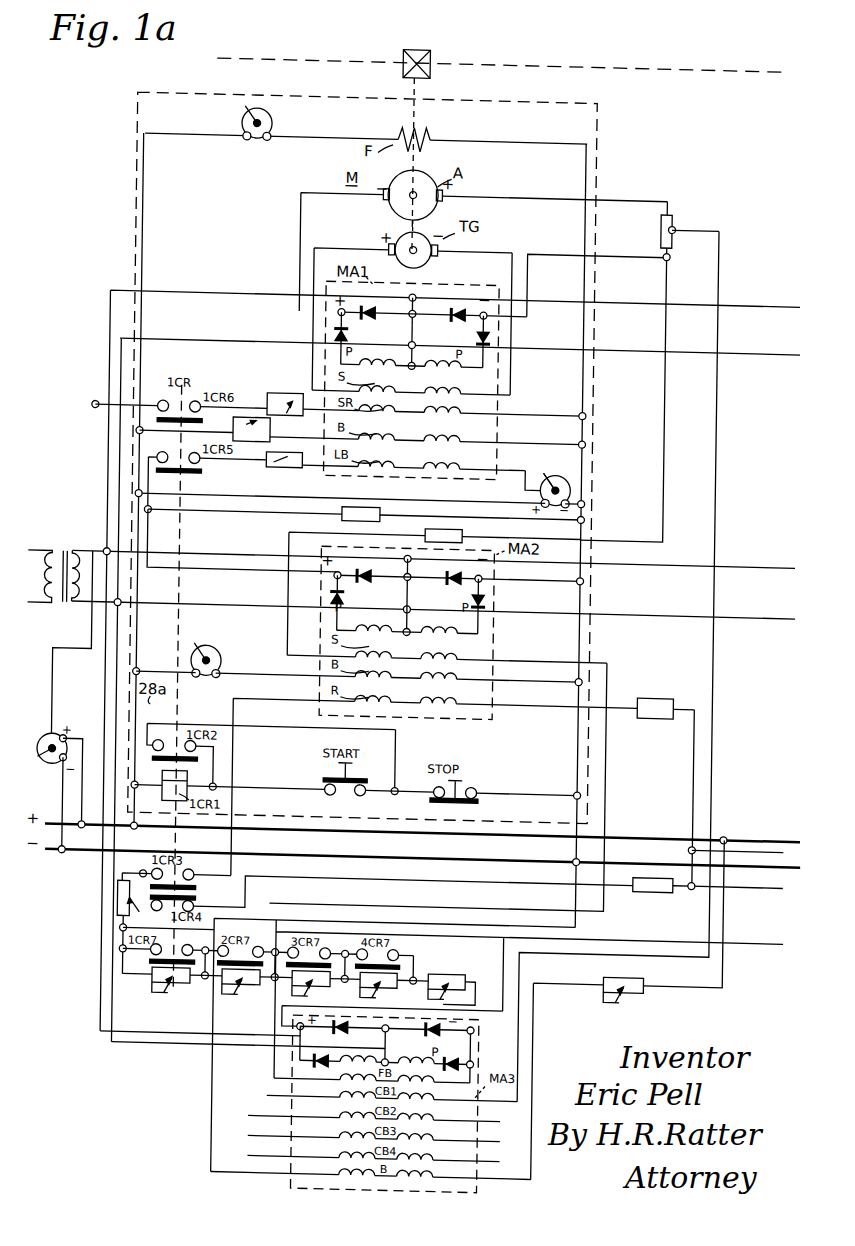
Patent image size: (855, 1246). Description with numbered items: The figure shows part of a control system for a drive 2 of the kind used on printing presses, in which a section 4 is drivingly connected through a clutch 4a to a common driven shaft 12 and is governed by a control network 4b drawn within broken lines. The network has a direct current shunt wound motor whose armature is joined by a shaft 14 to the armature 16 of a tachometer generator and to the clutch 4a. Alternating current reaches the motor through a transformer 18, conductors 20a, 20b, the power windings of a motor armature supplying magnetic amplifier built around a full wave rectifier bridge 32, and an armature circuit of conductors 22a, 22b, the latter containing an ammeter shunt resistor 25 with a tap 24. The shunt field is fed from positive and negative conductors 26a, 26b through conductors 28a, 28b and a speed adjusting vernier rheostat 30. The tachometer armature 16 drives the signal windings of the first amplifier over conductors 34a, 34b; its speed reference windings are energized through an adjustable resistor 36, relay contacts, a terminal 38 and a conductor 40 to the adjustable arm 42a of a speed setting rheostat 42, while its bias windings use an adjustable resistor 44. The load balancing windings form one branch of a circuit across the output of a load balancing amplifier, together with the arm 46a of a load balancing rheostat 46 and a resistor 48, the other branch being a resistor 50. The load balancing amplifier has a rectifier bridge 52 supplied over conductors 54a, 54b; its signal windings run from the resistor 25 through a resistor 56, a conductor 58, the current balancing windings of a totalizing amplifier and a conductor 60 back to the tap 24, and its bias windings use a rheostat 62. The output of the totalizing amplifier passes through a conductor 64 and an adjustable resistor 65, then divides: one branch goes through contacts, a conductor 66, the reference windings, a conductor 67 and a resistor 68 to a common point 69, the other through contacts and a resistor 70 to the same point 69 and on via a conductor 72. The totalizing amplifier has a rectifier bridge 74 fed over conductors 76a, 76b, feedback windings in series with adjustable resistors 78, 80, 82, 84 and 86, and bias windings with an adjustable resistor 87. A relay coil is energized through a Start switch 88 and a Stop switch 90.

The drive 2 is at (729, 33).
The section 4 is at (190, 75).
The clutch 4a is at (431, 50).
The control network 4b is at (602, 110).
The common driven shaft 12 is at (613, 52).
The shaft 14 is at (404, 216).
The armature of tachometer generator 16 is at (432, 253).
The transformer 18 is at (66, 544).
The conductor 20a is at (176, 286).
The conductor 20b is at (170, 334).
The conductor 22a is at (303, 218).
The conductor 22b is at (522, 186).
The tap 24 is at (678, 216).
The ammeter shunt resistor 25 is at (676, 208).
The positive conductor 26a is at (282, 824).
The negative conductor 26b is at (340, 840).
The conductor 28a is at (148, 168).
The conductor 28b is at (588, 176).
The speed adjusting vernier rheostat 30 is at (272, 121).
The full wave rectifier bridge 32 is at (424, 326).
The conductor 34a is at (328, 326).
The conductor 34b is at (507, 318).
The adjustable resistor 36 is at (302, 391).
The terminal 38 is at (98, 402).
The conductor 40 is at (62, 667).
The speed setting rheostat 42 is at (68, 733).
The adjustable arm 42a is at (44, 766).
The adjustable resistor 44 is at (278, 427).
The load balancing rheostat 46 is at (536, 482).
The adjustable arm 46a is at (548, 463).
The resistor 48 is at (280, 454).
The resistor 50 is at (345, 500).
The full wave rectifier bridge 52 is at (422, 589).
The conductor 54a is at (212, 548).
The conductor 54b is at (218, 600).
The resistor 56 is at (428, 518).
The conductor 58 is at (518, 646).
The conductor 60 is at (723, 650).
The adjustable rheostat 62 is at (357, 673).
The conductor 64 is at (460, 919).
The adjustable resistor 65 is at (140, 914).
The conductor 66 is at (240, 866).
The conductor 67 is at (626, 692).
The resistor 68 is at (660, 688).
The common point 69 is at (698, 874).
The resistor 70 is at (650, 876).
The conductor 72 is at (644, 928).
The full wave rectifier bridge 74 is at (418, 1044).
The conductor 76a is at (146, 1030).
The conductor 76b is at (150, 1044).
The adjustable resistor 78 is at (163, 988).
The adjustable resistor 80 is at (239, 991).
The adjustable resistor 82 is at (309, 990).
The adjustable resistor 84 is at (378, 991).
The adjustable resistor 86 is at (444, 992).
The adjustable resistor 87 is at (618, 972).
The Start switch 88 is at (314, 776).
The Stop switch 90 is at (478, 775).